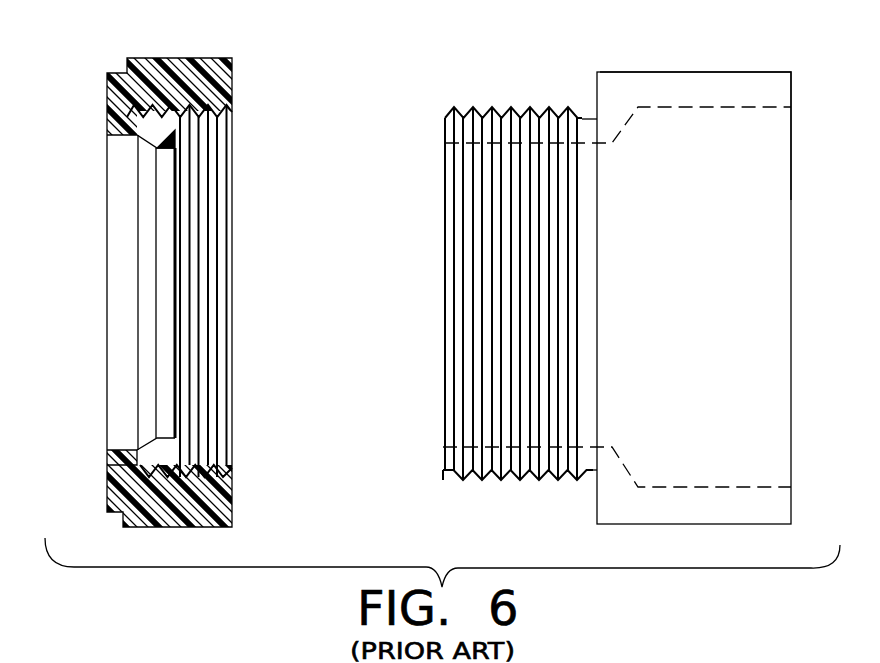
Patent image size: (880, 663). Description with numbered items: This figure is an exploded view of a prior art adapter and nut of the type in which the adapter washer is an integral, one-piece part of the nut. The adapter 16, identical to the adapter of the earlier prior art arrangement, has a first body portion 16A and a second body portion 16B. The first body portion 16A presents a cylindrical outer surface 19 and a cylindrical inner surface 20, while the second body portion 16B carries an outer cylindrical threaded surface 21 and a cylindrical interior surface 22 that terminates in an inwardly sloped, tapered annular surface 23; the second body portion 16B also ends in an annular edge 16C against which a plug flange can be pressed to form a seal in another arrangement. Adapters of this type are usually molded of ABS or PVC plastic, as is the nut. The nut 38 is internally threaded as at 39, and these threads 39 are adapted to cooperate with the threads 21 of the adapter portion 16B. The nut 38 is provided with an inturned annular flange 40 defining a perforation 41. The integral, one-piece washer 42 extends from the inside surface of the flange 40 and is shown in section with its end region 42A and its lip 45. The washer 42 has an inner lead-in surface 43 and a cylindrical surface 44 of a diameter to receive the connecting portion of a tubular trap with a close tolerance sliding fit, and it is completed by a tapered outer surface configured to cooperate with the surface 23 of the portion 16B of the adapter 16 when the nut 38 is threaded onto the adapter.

The adapter 16 is at (715, 525).
The first body portion 16A is at (722, 72).
The second body portion 16B is at (530, 107).
The annular edge 16C is at (445, 124).
The cylindrical outer surface 19 is at (620, 72).
The cylindrical inner surface 20 is at (663, 487).
The outer cylindrical threaded surface 21 is at (455, 107).
The cylindrical interior surface 22 is at (557, 440).
The tapered annular surface 23 is at (457, 449).
The nut 38 is at (205, 528).
The threads 39 is at (135, 463).
The inturned annular flange 40 is at (118, 472).
The perforation 41 is at (123, 337).
The integral, one-piece washer 42 is at (138, 217).
The sleeve end 42A is at (175, 398).
The inner lead-in surface 43 is at (148, 277).
The cylindrical surface 44 is at (168, 157).
The sleeve lip 45 is at (158, 120).